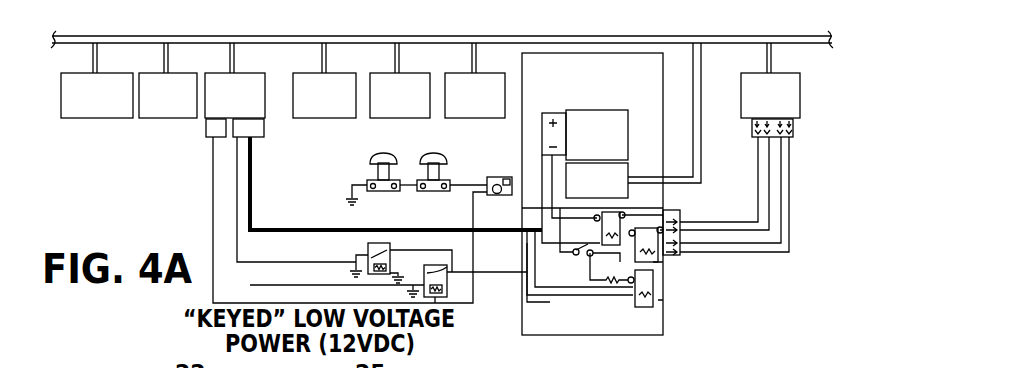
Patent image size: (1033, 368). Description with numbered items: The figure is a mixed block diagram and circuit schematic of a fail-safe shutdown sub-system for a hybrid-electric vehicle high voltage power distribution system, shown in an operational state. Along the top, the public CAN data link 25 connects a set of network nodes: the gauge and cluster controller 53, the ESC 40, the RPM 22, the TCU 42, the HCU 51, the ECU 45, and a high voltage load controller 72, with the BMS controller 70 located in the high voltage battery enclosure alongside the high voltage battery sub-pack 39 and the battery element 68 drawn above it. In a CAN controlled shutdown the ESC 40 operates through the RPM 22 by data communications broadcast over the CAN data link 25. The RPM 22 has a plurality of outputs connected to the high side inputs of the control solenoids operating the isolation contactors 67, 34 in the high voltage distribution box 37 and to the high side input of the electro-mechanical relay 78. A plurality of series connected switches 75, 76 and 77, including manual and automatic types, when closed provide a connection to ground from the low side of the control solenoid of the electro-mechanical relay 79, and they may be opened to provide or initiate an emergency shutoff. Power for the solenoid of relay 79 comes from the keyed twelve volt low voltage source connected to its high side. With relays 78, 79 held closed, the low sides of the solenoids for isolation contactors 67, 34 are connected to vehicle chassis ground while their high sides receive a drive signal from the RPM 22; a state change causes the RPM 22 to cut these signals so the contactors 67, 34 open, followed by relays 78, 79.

The RPM 22 is at (235, 80).
The CAN data link 25 is at (475, 43).
The isolation contactor 34 is at (685, 292).
The high voltage distribution box 37 is at (660, 325).
The high voltage battery sub-pack 39 is at (643, 75).
The ESC 40 is at (185, 107).
The TCU 42 is at (303, 78).
The ECU 45 is at (497, 77).
The HCU 51 is at (387, 78).
The gauge and cluster controller 53 is at (100, 107).
The isolation contactor 67 is at (684, 208).
The high voltage battery 68 is at (622, 135).
The BMS controller 70 is at (620, 173).
The high voltage load controller 72 is at (798, 113).
The switch 75 is at (372, 177).
The switch 76 is at (417, 190).
The switch 77 is at (490, 178).
The electro-mechanical relay 78 is at (368, 250).
The electro-mechanical relay 79 is at (443, 283).